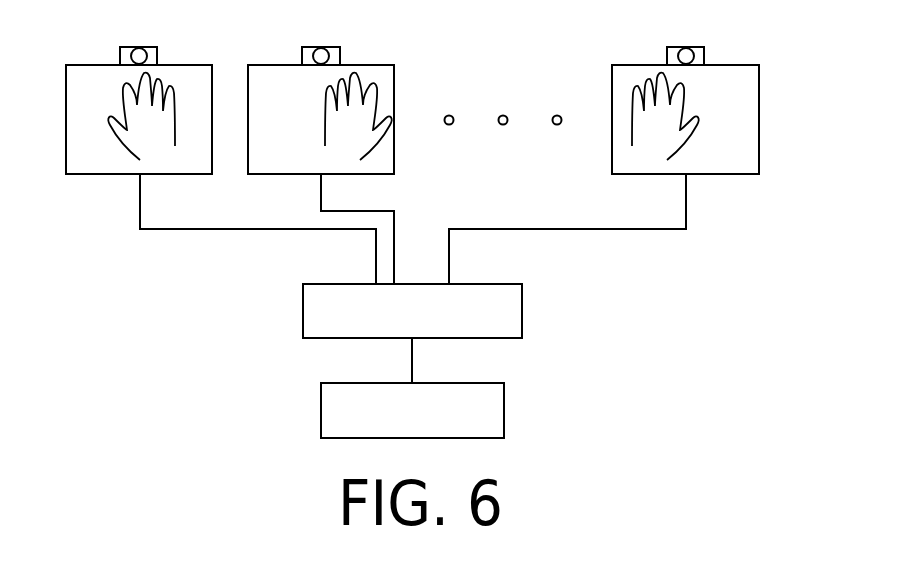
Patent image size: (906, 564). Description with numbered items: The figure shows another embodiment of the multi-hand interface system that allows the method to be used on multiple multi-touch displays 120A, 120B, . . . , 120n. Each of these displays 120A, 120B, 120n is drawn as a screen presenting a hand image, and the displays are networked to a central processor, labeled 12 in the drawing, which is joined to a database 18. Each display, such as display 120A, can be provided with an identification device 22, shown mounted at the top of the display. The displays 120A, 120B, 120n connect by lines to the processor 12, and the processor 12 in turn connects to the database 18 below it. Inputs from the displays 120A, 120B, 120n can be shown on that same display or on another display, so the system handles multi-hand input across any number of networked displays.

The identification device 22 is at (120, 47).
The multi-touch display 120A is at (185, 63).
The multi-touch display 120B is at (366, 63).
The multi-touch display 120n is at (730, 63).
The processor 12 is at (450, 338).
The database 18 is at (321, 389).